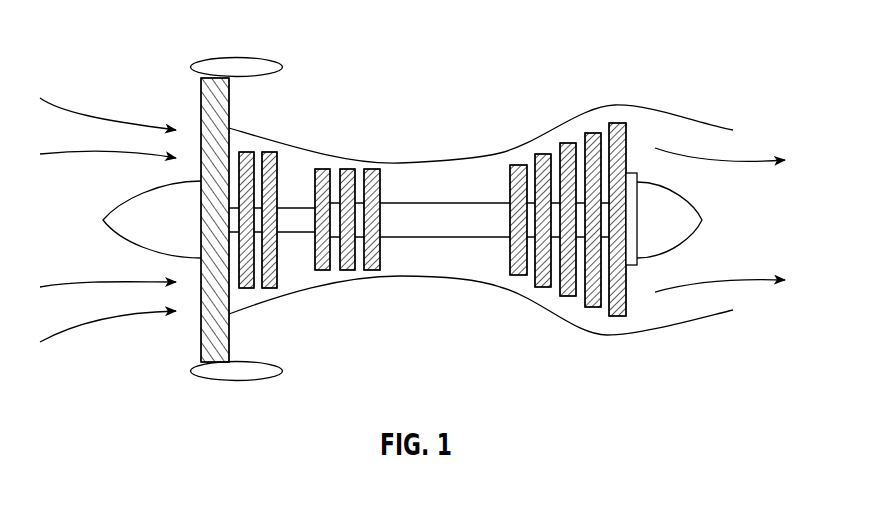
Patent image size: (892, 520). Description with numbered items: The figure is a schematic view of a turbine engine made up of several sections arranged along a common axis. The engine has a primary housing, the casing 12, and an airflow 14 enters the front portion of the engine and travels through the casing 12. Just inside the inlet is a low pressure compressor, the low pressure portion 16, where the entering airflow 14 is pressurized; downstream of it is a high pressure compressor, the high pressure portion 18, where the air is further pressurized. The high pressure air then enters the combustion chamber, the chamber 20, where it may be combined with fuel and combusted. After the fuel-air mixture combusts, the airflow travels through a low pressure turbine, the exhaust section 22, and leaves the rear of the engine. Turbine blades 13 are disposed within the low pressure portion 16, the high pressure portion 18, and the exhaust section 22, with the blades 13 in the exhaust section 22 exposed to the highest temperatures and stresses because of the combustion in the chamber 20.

The casing 12 is at (468, 157).
The blades 13 is at (268, 152).
The airflow 14 is at (90, 113).
The low pressure portion 16 is at (248, 293).
The high pressure portion 18 is at (349, 273).
The chamber 20 is at (453, 273).
The exhaust section 22 is at (568, 299).